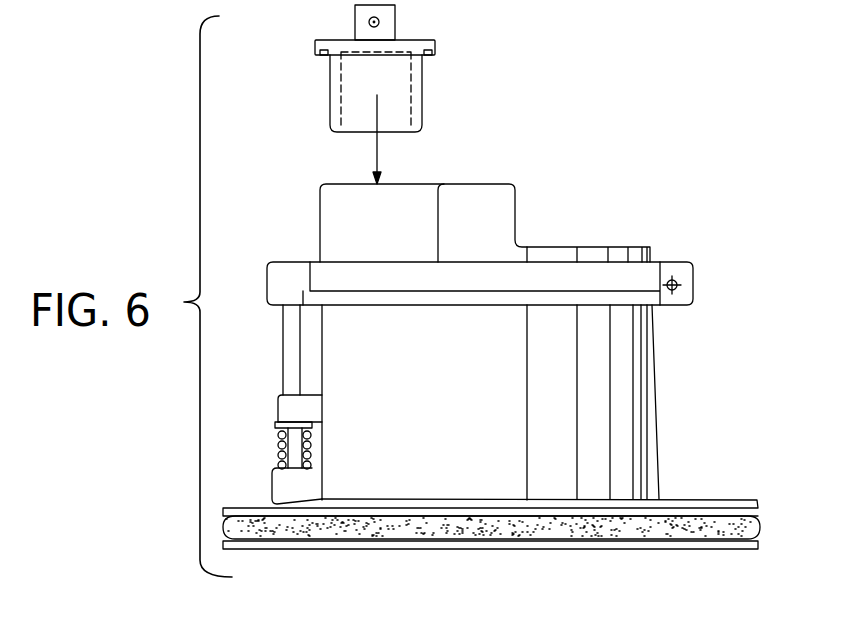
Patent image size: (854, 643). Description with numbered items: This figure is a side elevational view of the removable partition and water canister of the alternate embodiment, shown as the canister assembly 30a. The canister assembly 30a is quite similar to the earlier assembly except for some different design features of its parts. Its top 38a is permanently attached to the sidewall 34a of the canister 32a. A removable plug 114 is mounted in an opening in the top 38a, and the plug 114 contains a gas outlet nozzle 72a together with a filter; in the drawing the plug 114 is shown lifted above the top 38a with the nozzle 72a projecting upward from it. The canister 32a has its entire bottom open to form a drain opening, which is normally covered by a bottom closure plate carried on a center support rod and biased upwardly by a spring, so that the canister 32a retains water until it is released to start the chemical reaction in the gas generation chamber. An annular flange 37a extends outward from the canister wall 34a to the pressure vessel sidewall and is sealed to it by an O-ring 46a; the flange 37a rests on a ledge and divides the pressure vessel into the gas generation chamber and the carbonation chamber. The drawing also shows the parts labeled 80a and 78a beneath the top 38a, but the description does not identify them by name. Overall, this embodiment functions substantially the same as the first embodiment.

The gas outlet nozzle 72a is at (395, 15).
The removable plug 114 is at (422, 108).
The canister assembly 30a is at (552, 208).
The top 38a is at (593, 247).
The mounting plate 80a is at (297, 262).
The guide rod and spring 78a is at (282, 383).
The canister 32a is at (655, 362).
The sidewall 34a is at (658, 432).
The annular flange 37a is at (713, 499).
The O-ring 46a is at (700, 538).